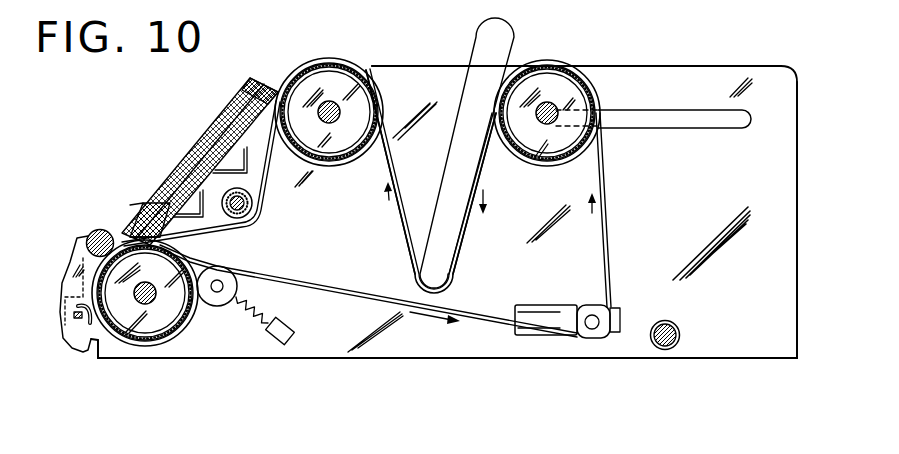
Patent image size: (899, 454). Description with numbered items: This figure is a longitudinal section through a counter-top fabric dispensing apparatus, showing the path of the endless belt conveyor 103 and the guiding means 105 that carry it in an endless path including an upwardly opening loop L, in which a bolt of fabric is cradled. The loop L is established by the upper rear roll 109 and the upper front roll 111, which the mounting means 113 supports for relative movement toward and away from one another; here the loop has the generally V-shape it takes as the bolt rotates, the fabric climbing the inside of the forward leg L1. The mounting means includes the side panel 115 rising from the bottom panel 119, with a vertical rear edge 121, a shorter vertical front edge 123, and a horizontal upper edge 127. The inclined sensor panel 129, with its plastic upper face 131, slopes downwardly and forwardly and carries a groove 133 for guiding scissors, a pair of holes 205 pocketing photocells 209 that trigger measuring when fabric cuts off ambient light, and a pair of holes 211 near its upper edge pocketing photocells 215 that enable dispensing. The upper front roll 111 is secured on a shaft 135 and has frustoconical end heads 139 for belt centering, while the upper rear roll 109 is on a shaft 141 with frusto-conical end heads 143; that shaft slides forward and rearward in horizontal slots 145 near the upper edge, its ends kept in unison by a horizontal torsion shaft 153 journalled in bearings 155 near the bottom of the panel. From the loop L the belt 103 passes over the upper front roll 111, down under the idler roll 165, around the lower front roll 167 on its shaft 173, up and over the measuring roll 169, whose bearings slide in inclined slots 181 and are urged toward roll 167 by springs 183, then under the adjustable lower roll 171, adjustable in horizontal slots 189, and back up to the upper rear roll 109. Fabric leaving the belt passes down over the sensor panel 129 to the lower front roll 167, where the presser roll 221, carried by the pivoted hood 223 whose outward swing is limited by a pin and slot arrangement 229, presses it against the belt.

The endless belt conveyor 103 is at (618, 226).
The guiding means 105 is at (588, 158).
The upper rear roll 109 is at (535, 160).
The upper front roll 111 is at (326, 165).
The mounting means 113 is at (722, 367).
The left side panel 115 is at (699, 78).
The bottom panel 119 is at (500, 360).
The vertical rear edge 121 is at (797, 248).
The vertical front edge 123 is at (96, 350).
The horizontal upper edge 127 is at (606, 65).
The sensor panel 129 is at (215, 150).
The plastic upper face 131 is at (200, 196).
The slot or groove 133 is at (147, 213).
The shaft 135 is at (331, 100).
The frustoconical end heads 139 is at (380, 84).
The shaft 141 is at (544, 100).
The frusto-conical end heads 143 is at (493, 193).
The horizontal slots 145 is at (716, 129).
The horizontal torsion shaft 153 is at (684, 334).
The bearings 155 is at (678, 322).
The idler roll 165 is at (252, 198).
The lower front roll 167 is at (190, 243).
The measuring roll 169 is at (208, 308).
The adjustable lower roll 171 is at (590, 310).
The shaft 173 is at (155, 298).
The inclined slots 181 is at (283, 318).
The springs 183 is at (270, 312).
The horizontal slots 189 is at (615, 330).
The holes 205 is at (142, 214).
The photocell 209 is at (130, 205).
The holes 211 is at (242, 118).
The photocell 215 is at (241, 118).
The presser roll 221 is at (86, 247).
The hood 223 is at (58, 277).
The pin and slot arrangement 229 is at (58, 312).
The loop L is at (468, 263).
The forward leg L1 is at (403, 238).